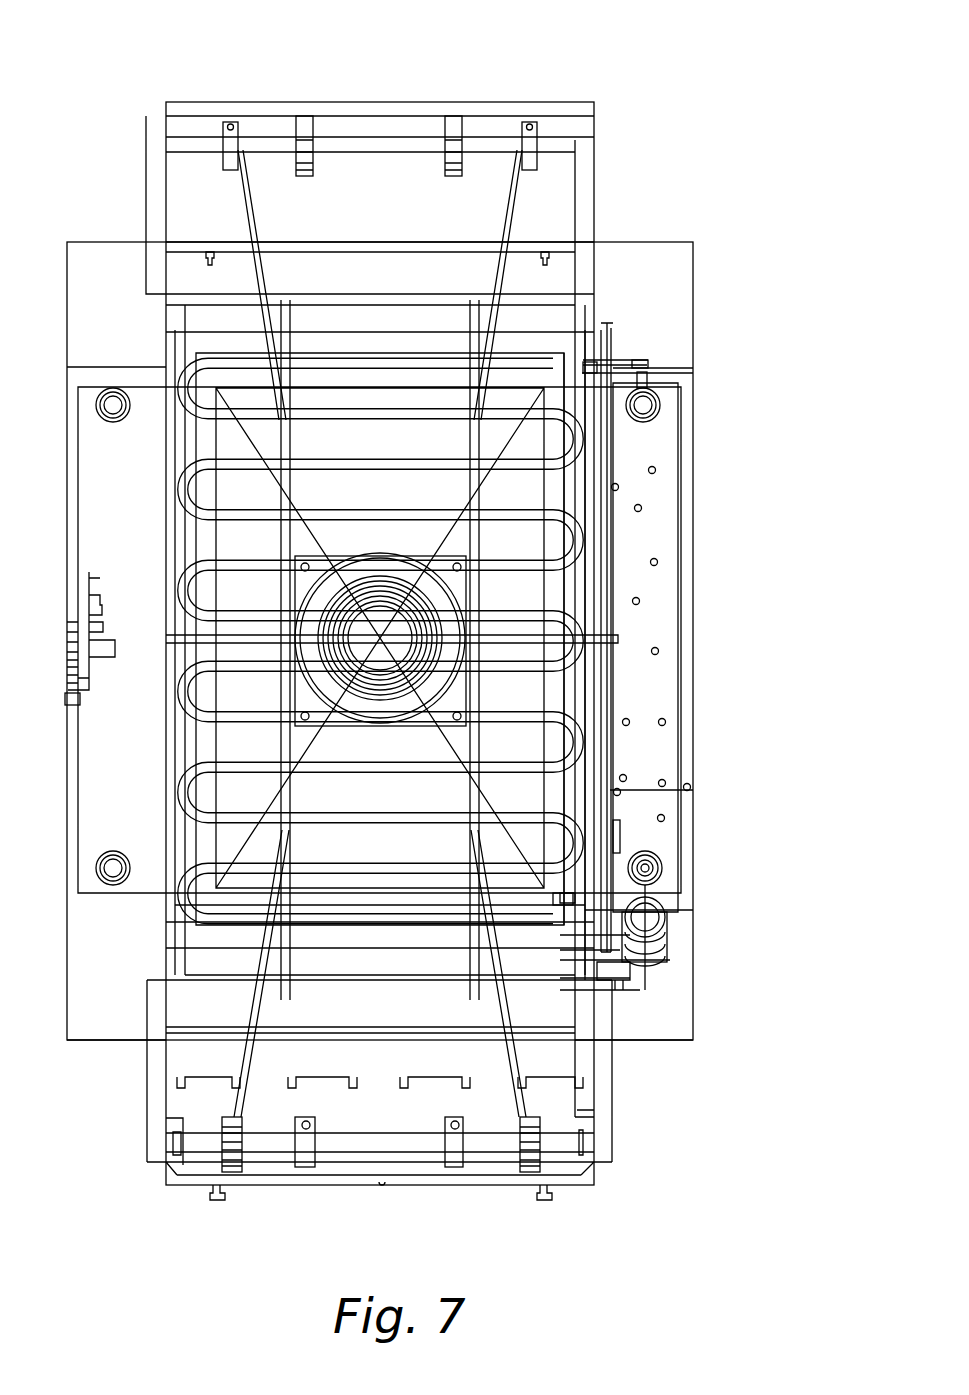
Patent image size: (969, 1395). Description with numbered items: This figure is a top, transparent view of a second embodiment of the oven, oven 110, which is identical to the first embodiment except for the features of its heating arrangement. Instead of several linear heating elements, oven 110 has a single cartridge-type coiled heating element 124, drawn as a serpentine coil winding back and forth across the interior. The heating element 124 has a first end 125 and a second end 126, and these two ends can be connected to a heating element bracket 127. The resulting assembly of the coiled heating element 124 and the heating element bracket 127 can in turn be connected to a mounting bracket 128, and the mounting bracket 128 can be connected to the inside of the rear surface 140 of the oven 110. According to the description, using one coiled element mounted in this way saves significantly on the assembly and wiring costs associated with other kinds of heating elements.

The oven 110 is at (127, 80).
The rear surface 140 is at (693, 305).
The first end 125 is at (633, 362).
The heating element 124 is at (533, 517).
The mounting bracket 128 is at (613, 597).
The heating element bracket 127 is at (598, 650).
The second end 126 is at (623, 908).